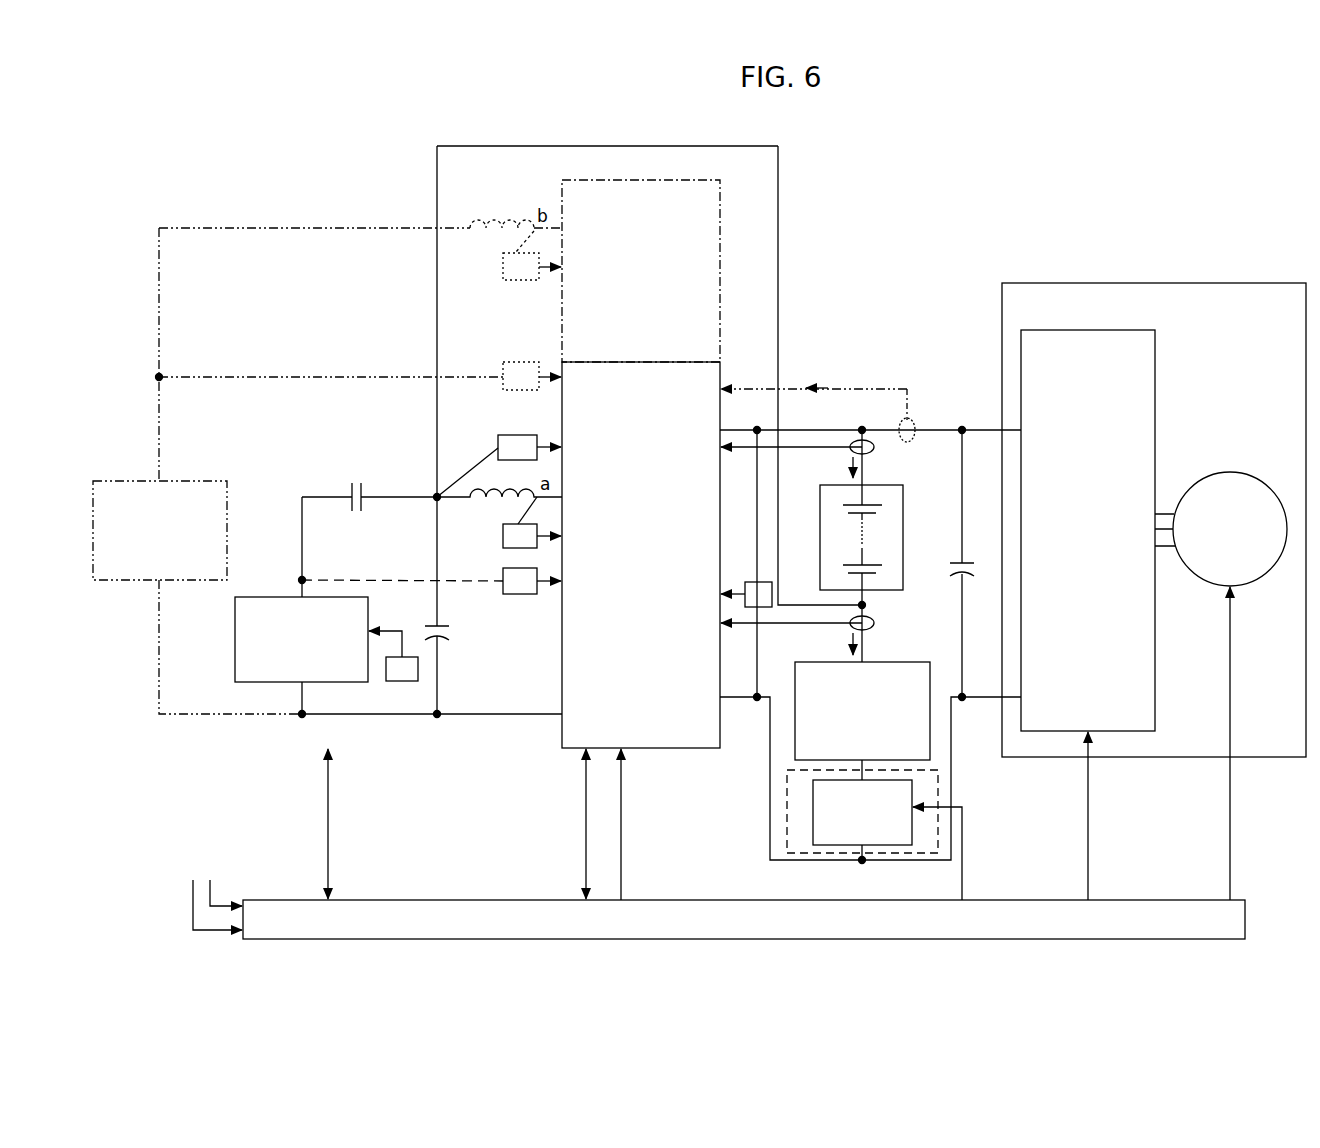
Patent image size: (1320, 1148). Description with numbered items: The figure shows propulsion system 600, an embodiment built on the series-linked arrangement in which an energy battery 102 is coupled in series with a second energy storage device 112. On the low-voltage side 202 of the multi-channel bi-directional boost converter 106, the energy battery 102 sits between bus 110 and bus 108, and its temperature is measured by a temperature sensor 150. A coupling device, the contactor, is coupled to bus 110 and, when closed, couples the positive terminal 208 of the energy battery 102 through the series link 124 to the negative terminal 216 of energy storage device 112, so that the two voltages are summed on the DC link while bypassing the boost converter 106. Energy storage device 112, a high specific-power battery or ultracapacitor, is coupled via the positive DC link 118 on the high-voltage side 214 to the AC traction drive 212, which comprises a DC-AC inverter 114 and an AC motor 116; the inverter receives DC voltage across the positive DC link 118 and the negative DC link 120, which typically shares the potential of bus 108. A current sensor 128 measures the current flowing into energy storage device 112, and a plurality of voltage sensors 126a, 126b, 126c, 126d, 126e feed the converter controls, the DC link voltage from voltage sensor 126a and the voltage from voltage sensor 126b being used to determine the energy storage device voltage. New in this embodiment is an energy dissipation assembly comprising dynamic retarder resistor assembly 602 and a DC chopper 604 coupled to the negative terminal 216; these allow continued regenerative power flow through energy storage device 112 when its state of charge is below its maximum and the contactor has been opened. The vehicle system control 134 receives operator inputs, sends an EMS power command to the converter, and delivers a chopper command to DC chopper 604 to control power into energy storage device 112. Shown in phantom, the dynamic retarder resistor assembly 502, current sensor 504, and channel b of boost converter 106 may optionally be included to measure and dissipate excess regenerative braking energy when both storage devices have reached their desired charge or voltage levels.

The propulsion system 600 is at (626, 108).
The low-voltage side 202 is at (387, 308).
The series link 124 is at (778, 312).
The multi-channel bi-directional boost converter 106 is at (556, 364).
The voltage sensor 126e is at (503, 257).
The voltage sensor 126b is at (502, 434).
The voltage sensor 126c is at (503, 534).
The voltage sensor 126d is at (503, 572).
The voltage sensor 126a is at (745, 592).
The bus 110 is at (302, 505).
The positive terminal 208 is at (302, 580).
The energy battery 102 is at (235, 612).
The bus 108 is at (302, 690).
The temperature sensor 150 is at (402, 683).
The dynamic retarder resistor assembly 502 is at (135, 481).
The high-voltage side 214 is at (855, 258).
The current sensor 504 is at (914, 418).
The current sensor 128 is at (872, 447).
The energy storage device 112 is at (903, 527).
The negative terminal 216 is at (868, 605).
The dynamic retarder resistor assembly 602 is at (930, 665).
The DC chopper 604 is at (813, 822).
The negative DC link 120 is at (962, 700).
The positive DC link 118 is at (982, 430).
The AC traction drive 212 is at (1208, 283).
The DC-AC inverter 114 is at (1155, 371).
The AC motor 116 is at (1262, 476).
The vehicle system control 134 is at (1245, 905).